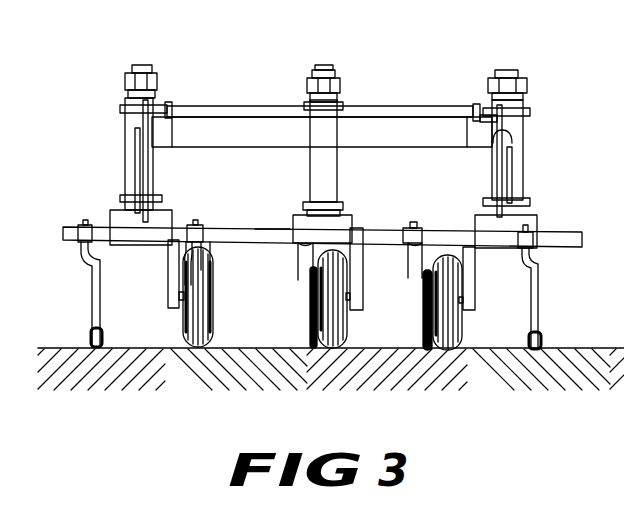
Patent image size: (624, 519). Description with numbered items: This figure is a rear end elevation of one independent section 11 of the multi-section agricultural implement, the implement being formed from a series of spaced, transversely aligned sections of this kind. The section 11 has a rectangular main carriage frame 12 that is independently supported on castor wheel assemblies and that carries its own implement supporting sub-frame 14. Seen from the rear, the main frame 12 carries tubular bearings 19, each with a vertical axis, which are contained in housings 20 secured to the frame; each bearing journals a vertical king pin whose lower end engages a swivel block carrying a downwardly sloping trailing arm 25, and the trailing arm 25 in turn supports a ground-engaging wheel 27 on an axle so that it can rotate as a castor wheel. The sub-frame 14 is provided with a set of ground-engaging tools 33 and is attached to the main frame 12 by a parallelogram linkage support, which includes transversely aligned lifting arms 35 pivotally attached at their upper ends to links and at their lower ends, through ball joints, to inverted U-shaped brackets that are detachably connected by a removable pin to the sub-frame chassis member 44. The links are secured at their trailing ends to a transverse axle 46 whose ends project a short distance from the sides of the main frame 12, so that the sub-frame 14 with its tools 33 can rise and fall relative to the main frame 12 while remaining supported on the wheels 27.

The independent section 11 is at (66, 84).
The main carriage frame 12 is at (230, 130).
The implement supporting sub-frame 14 is at (251, 222).
The tubular bearing 19 is at (152, 70).
The housing 20 is at (150, 160).
The trailing arm 25 is at (168, 280).
The ground-engaging wheel 27 is at (187, 333).
The ground-engaging tool 33 is at (93, 309).
The lifting arm 35 is at (125, 166).
The sub-frame chassis member 44 is at (269, 240).
The transverse axle 46 is at (427, 106).